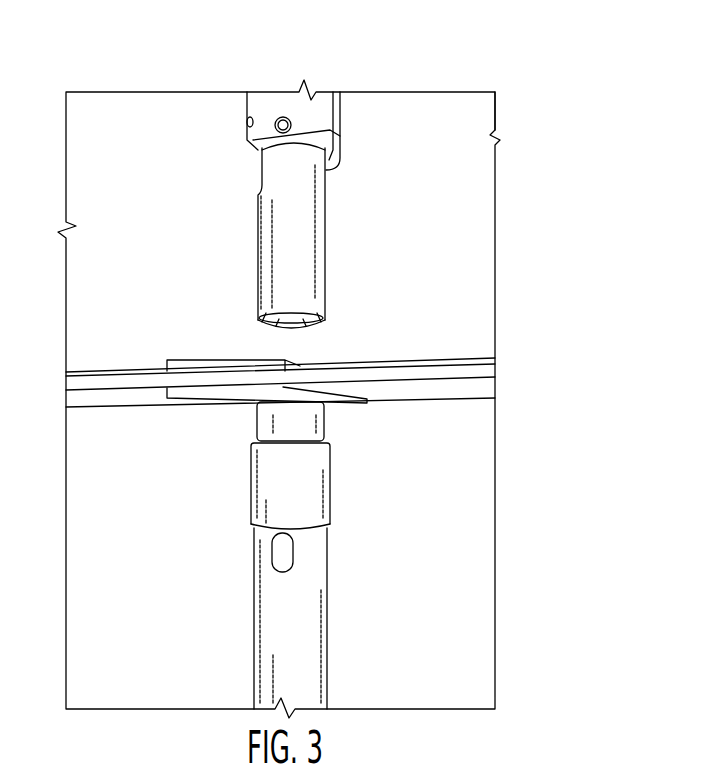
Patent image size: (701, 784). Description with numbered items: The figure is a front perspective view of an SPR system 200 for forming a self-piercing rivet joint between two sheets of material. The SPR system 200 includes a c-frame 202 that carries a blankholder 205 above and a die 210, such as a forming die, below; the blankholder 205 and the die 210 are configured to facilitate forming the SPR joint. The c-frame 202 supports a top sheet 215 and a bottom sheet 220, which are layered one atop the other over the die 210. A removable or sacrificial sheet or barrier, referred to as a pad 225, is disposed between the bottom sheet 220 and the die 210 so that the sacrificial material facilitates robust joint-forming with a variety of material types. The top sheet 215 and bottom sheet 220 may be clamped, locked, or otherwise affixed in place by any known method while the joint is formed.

The SPR system 200 is at (120, 84).
The c-frame 202 is at (548, 150).
The blankholder 205 is at (306, 238).
The die 210 is at (315, 425).
The top sheet 215 is at (218, 358).
The bottom sheet 220 is at (495, 361).
The sacrificial sheet 225 is at (205, 402).